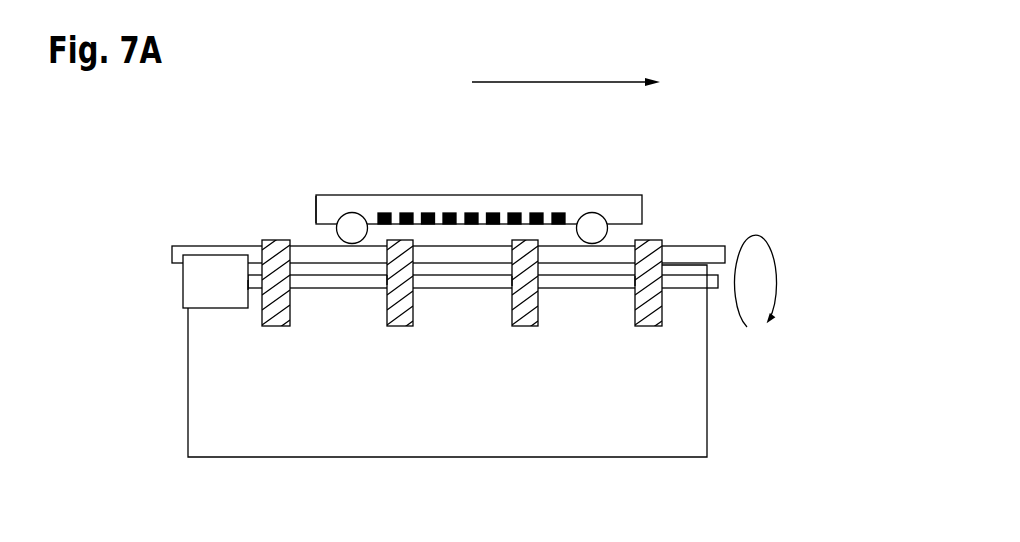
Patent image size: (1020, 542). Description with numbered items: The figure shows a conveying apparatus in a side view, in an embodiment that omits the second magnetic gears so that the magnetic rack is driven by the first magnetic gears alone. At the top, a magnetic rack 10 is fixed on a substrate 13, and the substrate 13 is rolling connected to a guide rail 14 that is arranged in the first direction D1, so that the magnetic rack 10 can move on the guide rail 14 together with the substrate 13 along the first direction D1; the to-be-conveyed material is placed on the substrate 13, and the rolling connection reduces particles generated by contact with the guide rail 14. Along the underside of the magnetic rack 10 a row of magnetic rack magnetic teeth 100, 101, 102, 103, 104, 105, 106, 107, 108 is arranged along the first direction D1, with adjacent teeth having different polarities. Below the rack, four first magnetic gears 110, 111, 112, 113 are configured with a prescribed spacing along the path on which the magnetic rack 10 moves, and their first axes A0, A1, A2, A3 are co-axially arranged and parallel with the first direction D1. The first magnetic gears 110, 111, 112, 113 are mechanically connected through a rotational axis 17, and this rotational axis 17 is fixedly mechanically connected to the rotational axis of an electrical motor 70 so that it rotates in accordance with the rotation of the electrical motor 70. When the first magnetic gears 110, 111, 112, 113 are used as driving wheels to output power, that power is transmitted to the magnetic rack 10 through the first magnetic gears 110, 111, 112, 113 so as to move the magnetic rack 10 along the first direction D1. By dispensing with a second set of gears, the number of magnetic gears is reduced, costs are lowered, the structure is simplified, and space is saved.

The magnetic rack 10 is at (642, 208).
The substrate 13 is at (326, 212).
The guide rail 14 is at (712, 253).
The rotational axis 17 is at (712, 282).
The electrical motor 70 is at (197, 288).
The magnetic rack magnetic tooth 100 is at (383, 213).
The magnetic rack magnetic tooth 101 is at (406, 213).
The magnetic rack magnetic tooth 102 is at (428, 213).
The magnetic rack magnetic tooth 103 is at (449, 213).
The magnetic rack magnetic tooth 104 is at (471, 213).
The magnetic rack magnetic tooth 105 is at (492, 213).
The magnetic rack magnetic tooth 106 is at (515, 213).
The magnetic rack magnetic tooth 107 is at (538, 213).
The magnetic rack magnetic tooth 108 is at (560, 213).
The first magnetic gear 110 is at (288, 300).
The first magnetic gear 111 is at (406, 302).
The first magnetic gear 112 is at (531, 303).
The first magnetic gear 113 is at (653, 305).
The first axis A0 is at (249, 285).
The first axis A1 is at (386, 280).
The first axis A2 is at (512, 281).
The first axis A3 is at (635, 281).
The first direction D1 is at (566, 68).